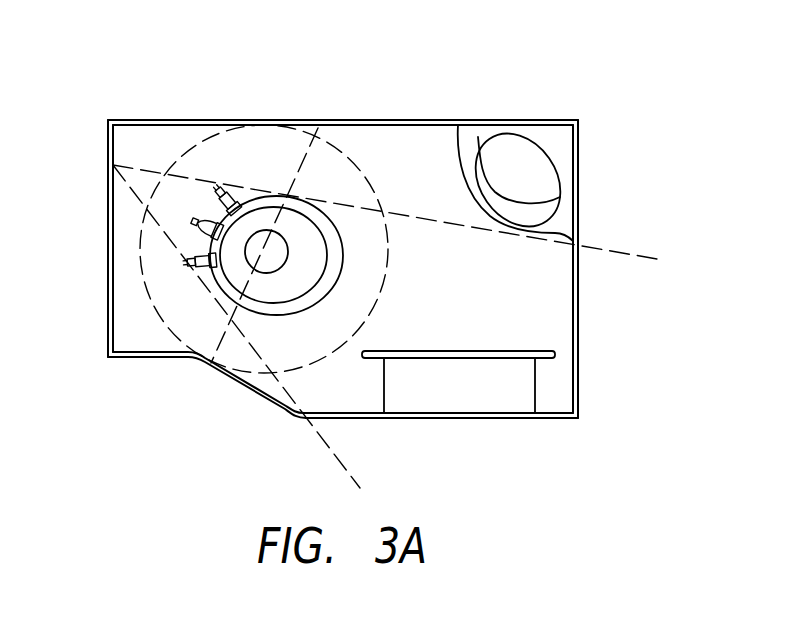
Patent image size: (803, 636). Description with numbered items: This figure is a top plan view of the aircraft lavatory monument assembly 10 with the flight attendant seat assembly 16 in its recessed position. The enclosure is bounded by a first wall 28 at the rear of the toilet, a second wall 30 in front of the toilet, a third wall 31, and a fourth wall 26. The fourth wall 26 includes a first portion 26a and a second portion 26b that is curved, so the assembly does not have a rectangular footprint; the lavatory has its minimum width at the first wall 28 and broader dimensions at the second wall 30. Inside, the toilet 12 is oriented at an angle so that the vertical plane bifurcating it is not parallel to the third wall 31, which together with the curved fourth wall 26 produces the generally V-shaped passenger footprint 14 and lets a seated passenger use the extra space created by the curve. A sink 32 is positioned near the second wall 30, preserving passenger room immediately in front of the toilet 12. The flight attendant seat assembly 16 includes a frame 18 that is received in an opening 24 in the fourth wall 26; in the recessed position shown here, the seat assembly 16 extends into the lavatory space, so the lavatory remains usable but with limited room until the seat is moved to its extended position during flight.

The lavatory monument assembly 10 is at (578, 157).
The toilet 12 is at (300, 207).
The passenger footprint 14 is at (320, 440).
The flight attendant seat assembly 16 is at (572, 451).
The frame 18 is at (533, 373).
The opening 24 is at (535, 410).
The fourth wall 26 is at (343, 444).
The first portion 26a is at (560, 419).
The second portion 26b is at (227, 380).
The first wall 28 is at (107, 238).
The second wall 30 is at (578, 204).
The third wall 31 is at (425, 120).
The sink 32 is at (518, 152).